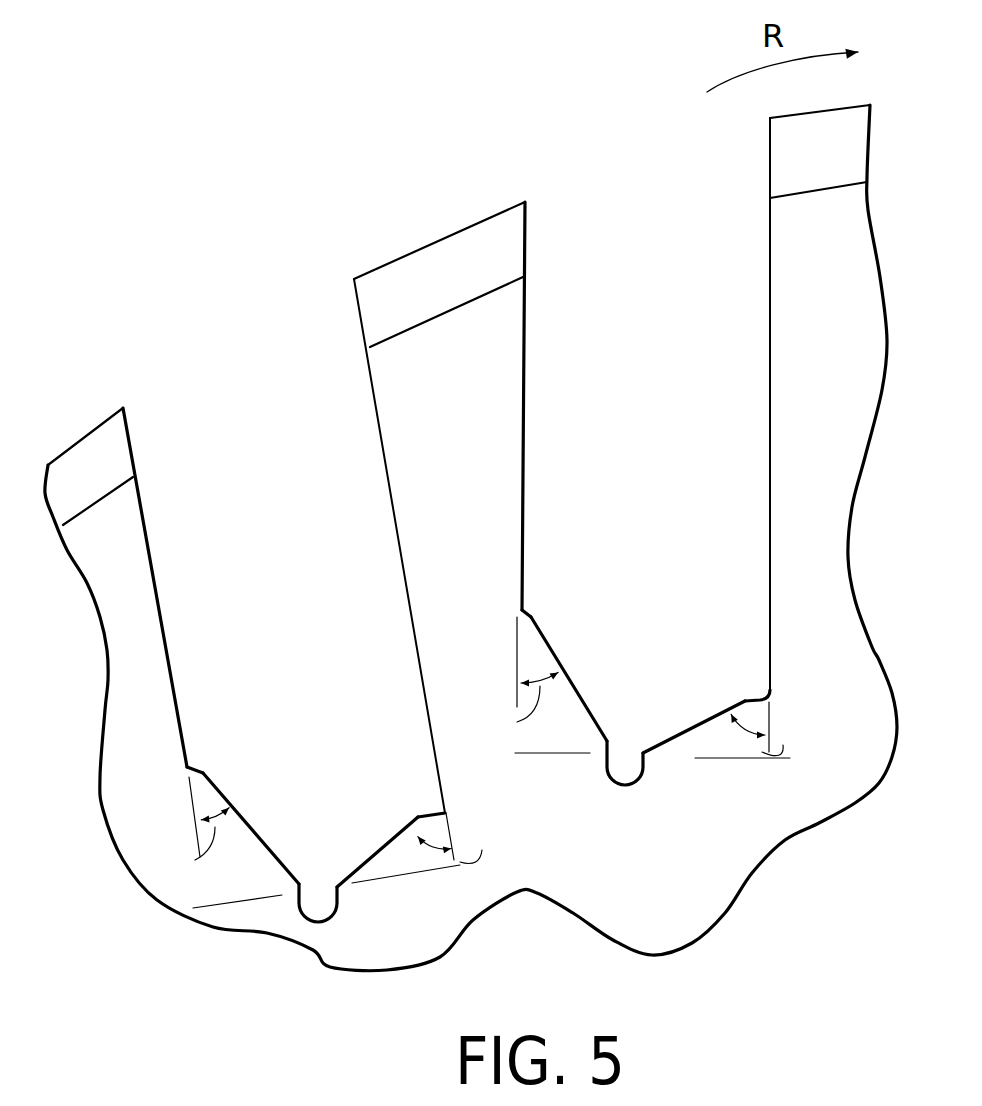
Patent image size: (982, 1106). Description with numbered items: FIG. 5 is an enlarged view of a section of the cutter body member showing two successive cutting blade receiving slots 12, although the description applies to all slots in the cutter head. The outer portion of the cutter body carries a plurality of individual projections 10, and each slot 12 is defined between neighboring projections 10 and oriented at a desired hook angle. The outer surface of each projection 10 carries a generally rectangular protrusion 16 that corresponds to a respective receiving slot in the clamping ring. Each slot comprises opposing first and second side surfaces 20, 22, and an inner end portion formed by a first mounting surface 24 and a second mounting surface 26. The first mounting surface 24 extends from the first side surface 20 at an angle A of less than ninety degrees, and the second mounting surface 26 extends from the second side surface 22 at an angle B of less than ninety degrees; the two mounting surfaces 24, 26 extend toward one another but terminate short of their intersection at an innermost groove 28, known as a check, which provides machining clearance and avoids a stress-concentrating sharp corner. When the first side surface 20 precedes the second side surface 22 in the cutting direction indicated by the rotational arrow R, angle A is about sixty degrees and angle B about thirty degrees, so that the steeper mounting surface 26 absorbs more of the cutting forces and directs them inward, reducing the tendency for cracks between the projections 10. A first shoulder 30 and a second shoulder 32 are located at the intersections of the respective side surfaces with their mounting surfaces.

The projection 10 is at (459, 522).
The cutting blade receiving slot 12 is at (253, 420).
The protrusion 16 is at (87, 465).
The first side surface 20 is at (395, 512).
The second side surface 22 is at (162, 617).
The first mounting surface 24 is at (383, 847).
The second mounting surface 26 is at (237, 817).
The innermost groove 28 is at (330, 910).
The first shoulder 30 is at (442, 815).
The second shoulder 32 is at (190, 768).